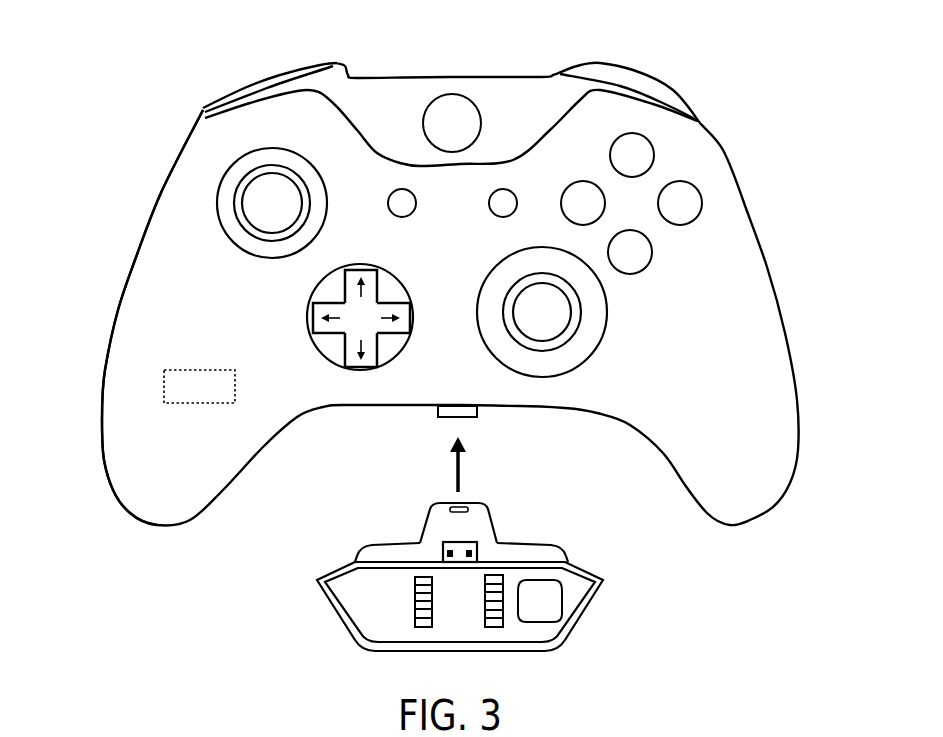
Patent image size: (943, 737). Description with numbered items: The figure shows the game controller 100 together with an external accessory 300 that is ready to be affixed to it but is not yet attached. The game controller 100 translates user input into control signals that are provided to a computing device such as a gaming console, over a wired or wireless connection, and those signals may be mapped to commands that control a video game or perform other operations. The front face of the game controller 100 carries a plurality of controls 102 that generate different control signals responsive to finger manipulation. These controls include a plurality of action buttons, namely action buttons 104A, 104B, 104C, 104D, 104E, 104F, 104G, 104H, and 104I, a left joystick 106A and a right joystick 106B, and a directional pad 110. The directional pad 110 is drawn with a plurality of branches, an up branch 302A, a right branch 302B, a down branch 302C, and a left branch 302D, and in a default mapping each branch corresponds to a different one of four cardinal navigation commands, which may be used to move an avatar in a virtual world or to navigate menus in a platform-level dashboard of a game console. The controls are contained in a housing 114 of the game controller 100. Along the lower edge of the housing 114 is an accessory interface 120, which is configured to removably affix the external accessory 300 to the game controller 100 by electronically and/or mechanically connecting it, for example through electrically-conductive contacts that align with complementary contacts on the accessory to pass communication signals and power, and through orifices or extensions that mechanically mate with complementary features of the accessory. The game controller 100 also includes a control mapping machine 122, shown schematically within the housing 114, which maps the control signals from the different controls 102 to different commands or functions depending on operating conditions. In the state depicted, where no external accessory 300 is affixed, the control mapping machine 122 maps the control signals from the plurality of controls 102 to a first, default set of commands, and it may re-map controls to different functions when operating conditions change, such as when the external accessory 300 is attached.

The game controller 100 is at (133, 58).
The plurality of controls 102 is at (740, 122).
The action button 104A is at (297, 62).
The action button 104B is at (633, 68).
The action button 104C is at (562, 203).
The action button 104D is at (652, 254).
The action button 104E is at (702, 206).
The action button 104F is at (611, 153).
The action button 104G is at (402, 218).
The action button 104H is at (503, 218).
The action button 104I is at (425, 112).
The left joystick 106A is at (268, 241).
The right joystick 106B is at (563, 346).
The directional pad 110 is at (280, 307).
The housing 114 is at (118, 312).
The accessory interface 120 is at (457, 419).
The control mapping machine 122 is at (197, 404).
The external accessory 300 is at (372, 520).
The up branch 302A is at (347, 288).
The right branch 302B is at (398, 336).
The down branch 302C is at (358, 368).
The left branch 302D is at (323, 336).